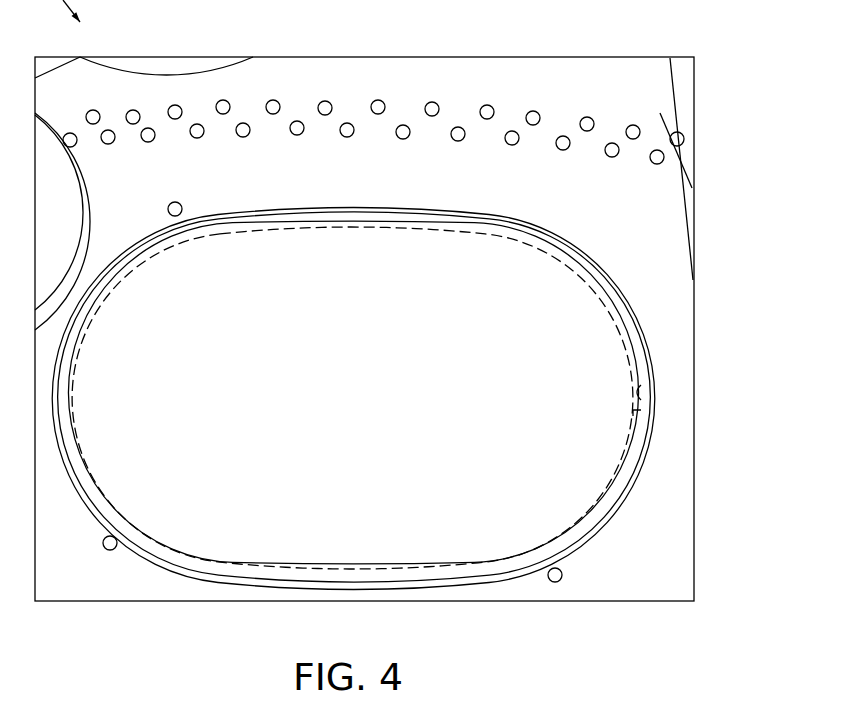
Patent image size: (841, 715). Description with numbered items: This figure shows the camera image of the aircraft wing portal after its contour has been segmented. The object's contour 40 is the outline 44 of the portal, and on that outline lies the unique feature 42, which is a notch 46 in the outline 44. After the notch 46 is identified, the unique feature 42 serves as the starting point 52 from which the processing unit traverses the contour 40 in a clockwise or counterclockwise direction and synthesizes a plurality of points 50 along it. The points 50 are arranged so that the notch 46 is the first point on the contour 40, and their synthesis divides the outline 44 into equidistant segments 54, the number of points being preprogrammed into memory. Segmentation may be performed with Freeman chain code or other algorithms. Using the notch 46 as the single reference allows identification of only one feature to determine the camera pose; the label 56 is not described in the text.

The contour 40 is at (353, 294).
The outline 44 is at (472, 238).
The unique feature 42 is at (428, 395).
The notch 46 is at (640, 412).
The plurality of points 50 is at (240, 228).
The starting point 52 is at (641, 398).
The equidistant segments 54 is at (407, 229).
The gasket 56 is at (642, 713).